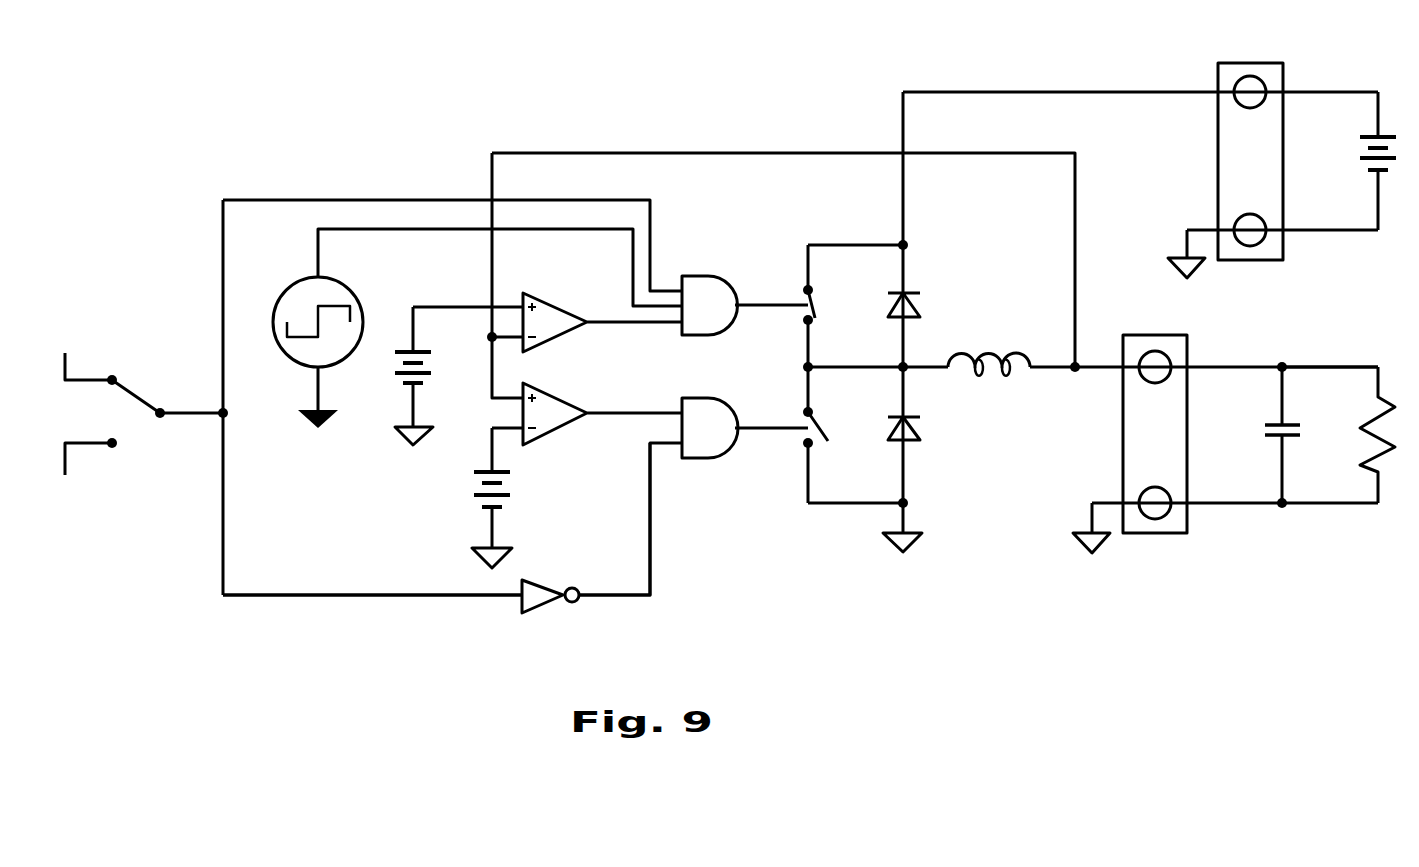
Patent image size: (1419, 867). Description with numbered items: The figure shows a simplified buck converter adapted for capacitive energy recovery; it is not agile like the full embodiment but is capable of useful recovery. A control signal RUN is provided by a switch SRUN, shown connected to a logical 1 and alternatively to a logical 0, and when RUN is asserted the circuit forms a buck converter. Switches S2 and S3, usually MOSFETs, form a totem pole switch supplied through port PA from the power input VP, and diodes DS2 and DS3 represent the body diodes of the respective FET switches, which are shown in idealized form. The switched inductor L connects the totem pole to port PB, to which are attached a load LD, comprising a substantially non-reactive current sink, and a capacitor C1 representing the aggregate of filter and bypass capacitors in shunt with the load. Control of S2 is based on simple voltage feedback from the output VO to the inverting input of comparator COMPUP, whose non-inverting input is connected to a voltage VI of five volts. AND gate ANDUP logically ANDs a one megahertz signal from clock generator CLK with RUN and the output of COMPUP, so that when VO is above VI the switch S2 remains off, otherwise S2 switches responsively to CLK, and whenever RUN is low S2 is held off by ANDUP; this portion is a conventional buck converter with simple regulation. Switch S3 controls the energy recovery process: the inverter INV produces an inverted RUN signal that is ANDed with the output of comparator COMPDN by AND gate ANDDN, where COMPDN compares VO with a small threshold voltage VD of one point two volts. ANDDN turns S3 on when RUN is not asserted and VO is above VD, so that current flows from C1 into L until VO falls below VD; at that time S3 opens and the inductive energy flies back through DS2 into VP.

The logical 1 is at (87, 351).
The logical 0 is at (87, 479).
The switch SRUN is at (155, 357).
The clock generator CLK is at (303, 281).
The voltage VI is at (430, 303).
The threshold voltage VD is at (481, 467).
The comparator COMPUP is at (593, 343).
The comparator COMPDN is at (590, 392).
The AND gate ANDUP is at (740, 232).
The AND gate ANDDN is at (710, 460).
The switch S2 is at (806, 300).
The switch S3 is at (814, 431).
The body diode DS2 is at (918, 304).
The body diode DS3 is at (935, 459).
The switched inductor L is at (997, 350).
The port PA is at (1283, 80).
The power input VP is at (1358, 137).
The port PB is at (1188, 346).
The VO voltage VO is at (1330, 352).
The load LD is at (1363, 427).
The capacitor C1 is at (1287, 436).
The inverter INV is at (540, 580).
The RUN signal RUN is at (278, 580).